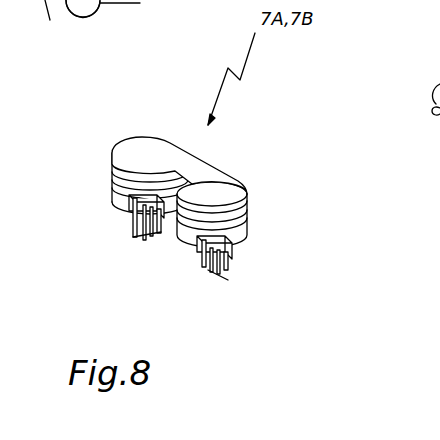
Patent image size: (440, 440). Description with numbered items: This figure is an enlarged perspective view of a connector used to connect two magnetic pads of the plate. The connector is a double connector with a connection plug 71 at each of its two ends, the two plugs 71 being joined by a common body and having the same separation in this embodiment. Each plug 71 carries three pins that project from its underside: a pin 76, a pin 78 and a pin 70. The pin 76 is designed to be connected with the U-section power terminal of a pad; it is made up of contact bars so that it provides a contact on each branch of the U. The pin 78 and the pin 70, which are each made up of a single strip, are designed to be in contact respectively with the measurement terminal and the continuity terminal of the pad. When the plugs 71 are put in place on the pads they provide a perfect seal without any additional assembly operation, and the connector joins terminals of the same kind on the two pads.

The pin 70 is at (175, 271).
The plug 71 is at (113, 188).
The pin 76 is at (133, 238).
The pin 78 is at (140, 217).